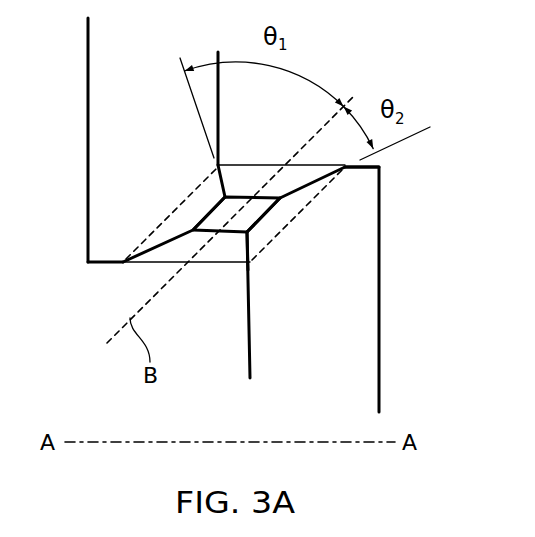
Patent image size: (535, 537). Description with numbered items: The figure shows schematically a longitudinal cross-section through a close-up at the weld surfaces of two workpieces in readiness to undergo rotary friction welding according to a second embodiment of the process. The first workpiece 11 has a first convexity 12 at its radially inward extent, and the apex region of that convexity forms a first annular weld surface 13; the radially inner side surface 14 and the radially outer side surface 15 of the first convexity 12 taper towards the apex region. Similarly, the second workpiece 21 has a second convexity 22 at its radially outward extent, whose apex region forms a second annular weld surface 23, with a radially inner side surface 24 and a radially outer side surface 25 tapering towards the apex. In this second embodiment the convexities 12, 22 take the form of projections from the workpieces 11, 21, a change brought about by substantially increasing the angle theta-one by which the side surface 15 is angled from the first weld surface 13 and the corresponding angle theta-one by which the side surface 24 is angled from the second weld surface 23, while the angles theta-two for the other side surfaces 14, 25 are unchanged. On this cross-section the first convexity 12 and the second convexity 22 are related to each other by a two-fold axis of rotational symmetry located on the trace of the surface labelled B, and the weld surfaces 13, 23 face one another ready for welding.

The first workpiece 11 is at (151, 113).
The first convexity 12 is at (192, 218).
The first annular weld surface 13 is at (203, 185).
The radially inner side surface of first convexity 14 is at (150, 252).
The radially outer side surface of first convexity 15 is at (223, 188).
The second workpiece 21 is at (341, 379).
The second convexity 22 is at (290, 208).
The second annular weld surface 23 is at (263, 213).
The radially inner side surface of second convexity 24 is at (243, 247).
The radially outer side surface of second convexity 25 is at (308, 186).